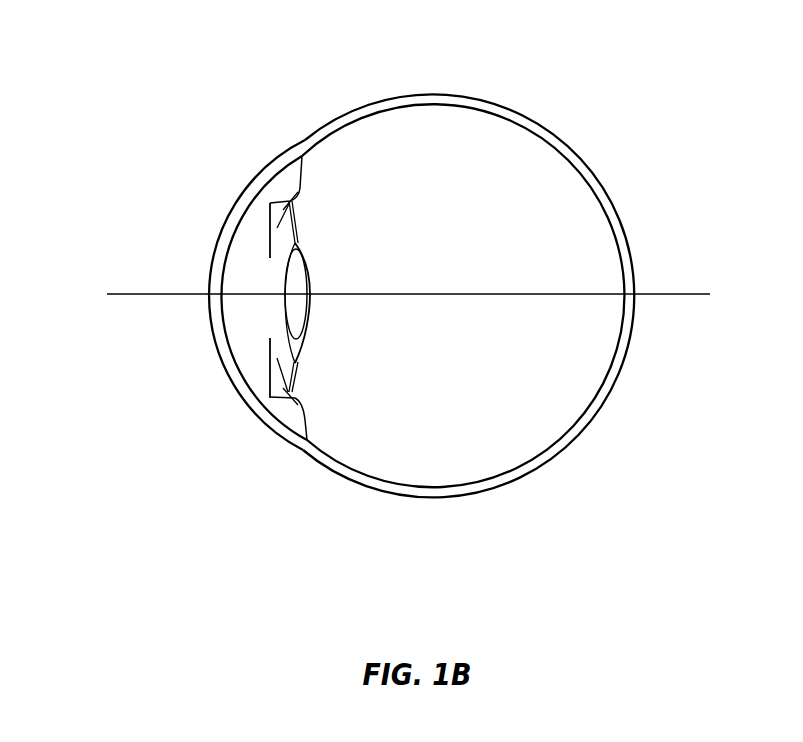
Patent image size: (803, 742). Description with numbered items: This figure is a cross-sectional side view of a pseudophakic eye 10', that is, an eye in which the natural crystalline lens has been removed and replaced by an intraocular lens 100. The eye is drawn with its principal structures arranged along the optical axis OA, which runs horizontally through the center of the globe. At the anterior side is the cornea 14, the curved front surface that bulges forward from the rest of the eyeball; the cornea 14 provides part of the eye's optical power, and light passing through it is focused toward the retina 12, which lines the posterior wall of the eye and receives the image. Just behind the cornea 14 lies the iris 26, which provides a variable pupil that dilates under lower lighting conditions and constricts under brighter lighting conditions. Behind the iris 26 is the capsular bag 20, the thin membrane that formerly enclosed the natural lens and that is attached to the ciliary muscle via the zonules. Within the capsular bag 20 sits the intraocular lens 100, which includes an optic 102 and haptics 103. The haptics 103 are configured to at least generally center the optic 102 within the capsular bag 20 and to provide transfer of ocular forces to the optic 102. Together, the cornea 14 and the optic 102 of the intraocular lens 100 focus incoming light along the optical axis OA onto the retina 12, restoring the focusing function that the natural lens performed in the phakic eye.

The pseudophakic eye 10' is at (339, 256).
The optical axis OA is at (132, 292).
The retina 12 is at (607, 372).
The cornea 14 is at (217, 355).
The iris 26 is at (268, 357).
The capsular bag 20 is at (306, 340).
The optic 102 is at (296, 286).
The haptics 103 is at (300, 221).
The intraocular lens 100 is at (262, 270).